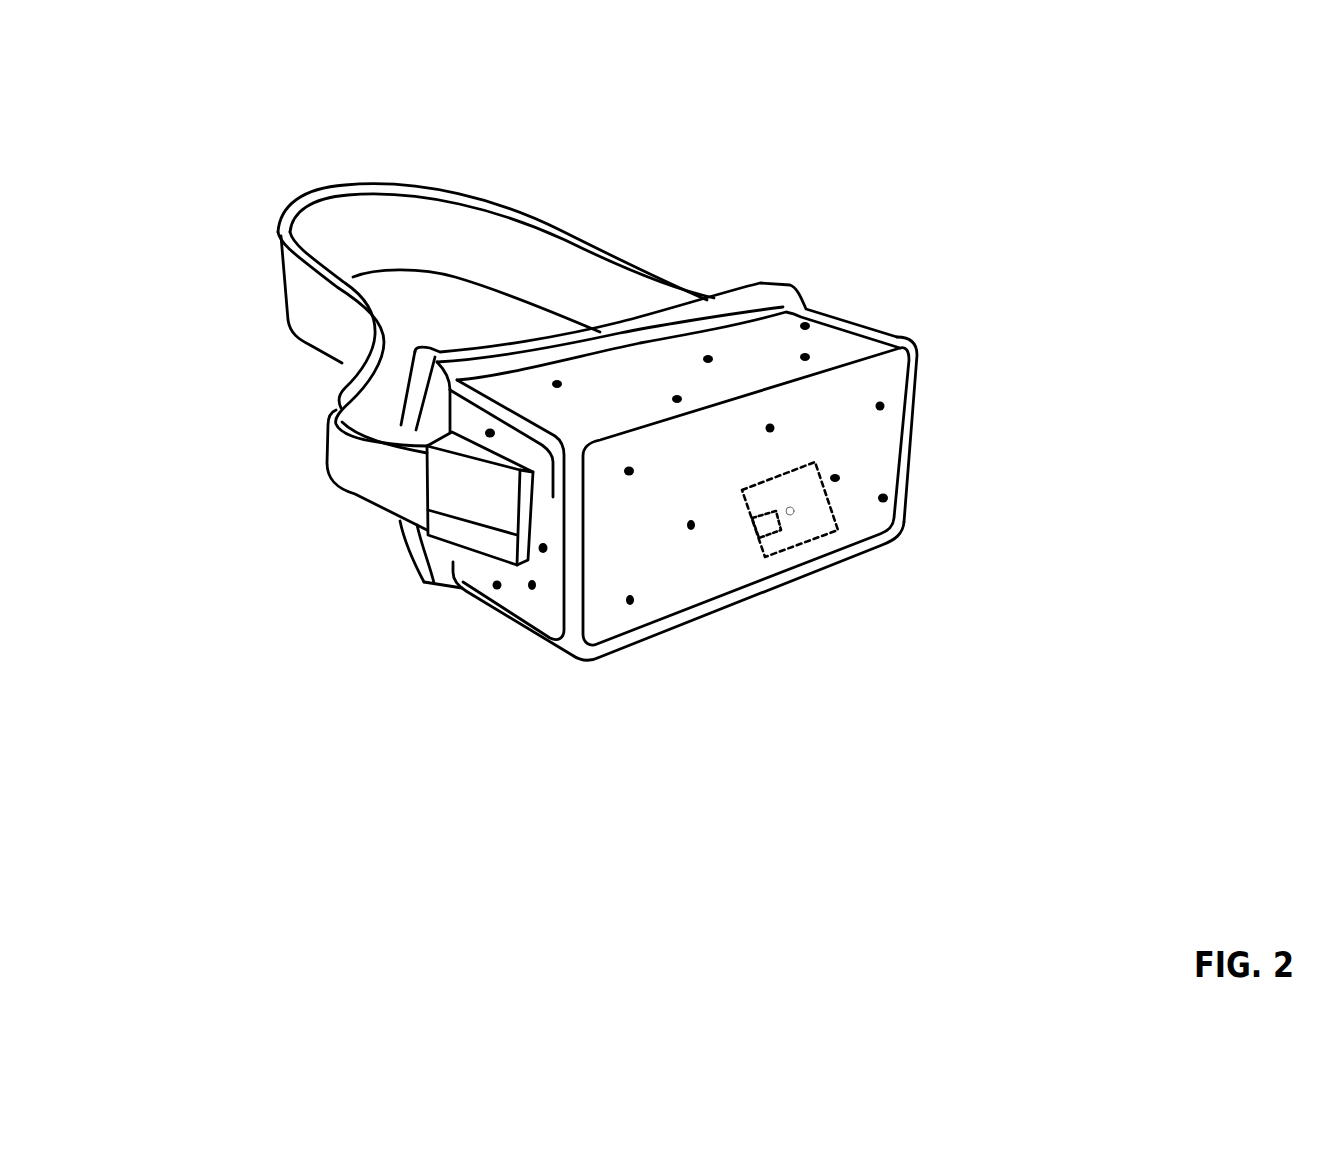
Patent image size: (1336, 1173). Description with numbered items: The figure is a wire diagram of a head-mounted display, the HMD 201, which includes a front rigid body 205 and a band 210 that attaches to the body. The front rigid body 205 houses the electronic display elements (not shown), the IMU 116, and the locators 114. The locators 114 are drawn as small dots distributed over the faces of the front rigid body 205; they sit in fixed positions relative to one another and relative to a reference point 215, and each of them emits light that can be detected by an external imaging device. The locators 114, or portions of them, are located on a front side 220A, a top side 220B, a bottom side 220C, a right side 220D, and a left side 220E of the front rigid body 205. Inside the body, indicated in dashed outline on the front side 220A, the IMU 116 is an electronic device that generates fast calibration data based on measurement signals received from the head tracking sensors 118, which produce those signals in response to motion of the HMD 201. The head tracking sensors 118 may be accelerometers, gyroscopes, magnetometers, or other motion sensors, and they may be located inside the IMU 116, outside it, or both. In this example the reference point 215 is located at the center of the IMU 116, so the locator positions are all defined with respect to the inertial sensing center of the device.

The HMD 201 is at (227, 147).
The band 210 is at (603, 252).
The front rigid body 205 is at (663, 496).
The front side 220A is at (617, 622).
The top side 220B is at (533, 387).
The bottom side 220C is at (491, 632).
The right side 220D is at (535, 590).
The left side 220E is at (883, 325).
The locators 114 is at (886, 496).
The IMU 116 is at (841, 531).
The head tracking sensors 118 is at (762, 540).
The reference point 215 is at (791, 523).